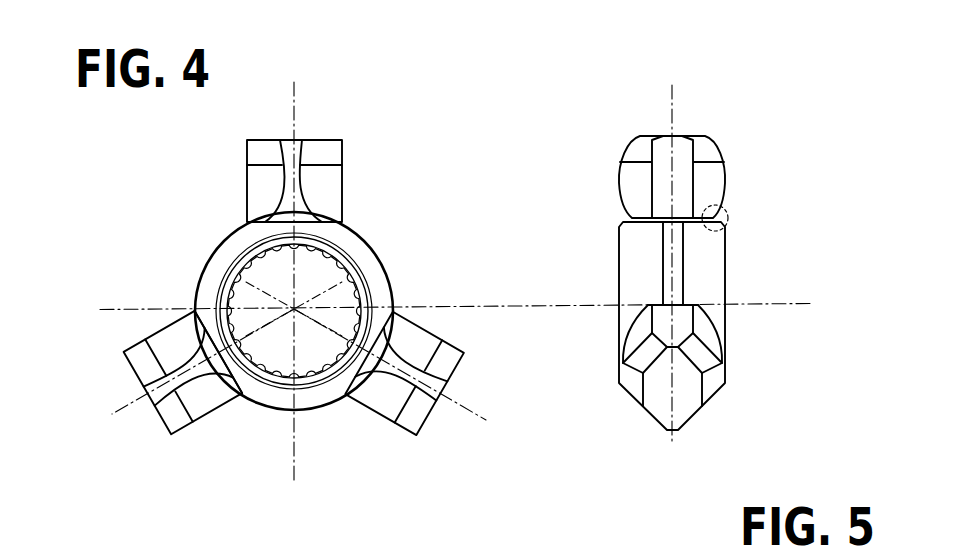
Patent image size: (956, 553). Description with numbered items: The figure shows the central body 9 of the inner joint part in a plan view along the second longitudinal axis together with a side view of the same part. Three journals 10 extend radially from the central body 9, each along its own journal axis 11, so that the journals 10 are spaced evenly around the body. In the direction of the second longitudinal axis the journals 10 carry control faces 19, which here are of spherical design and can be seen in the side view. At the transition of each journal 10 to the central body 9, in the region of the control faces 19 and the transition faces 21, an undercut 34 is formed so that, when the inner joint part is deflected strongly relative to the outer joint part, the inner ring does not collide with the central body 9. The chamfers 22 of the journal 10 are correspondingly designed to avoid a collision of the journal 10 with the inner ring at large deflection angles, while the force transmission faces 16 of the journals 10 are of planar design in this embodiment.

In FIG. 4, the central body 9 is at (212, 250).
In FIG. 4, the journal 10 is at (185, 332).
In FIG. 5, the journal 10 is at (635, 187).
In FIG. 4, the journal axis 11 is at (293, 118).
In FIG. 4, the control face 19 is at (297, 173).
In FIG. 4, the transition face 21 is at (205, 407).
In FIG. 4, the chamfer 22 is at (175, 410).
In FIG. 5, the force transmission face 16 is at (683, 175).
In FIG. 5, the undercut 34 is at (716, 217).